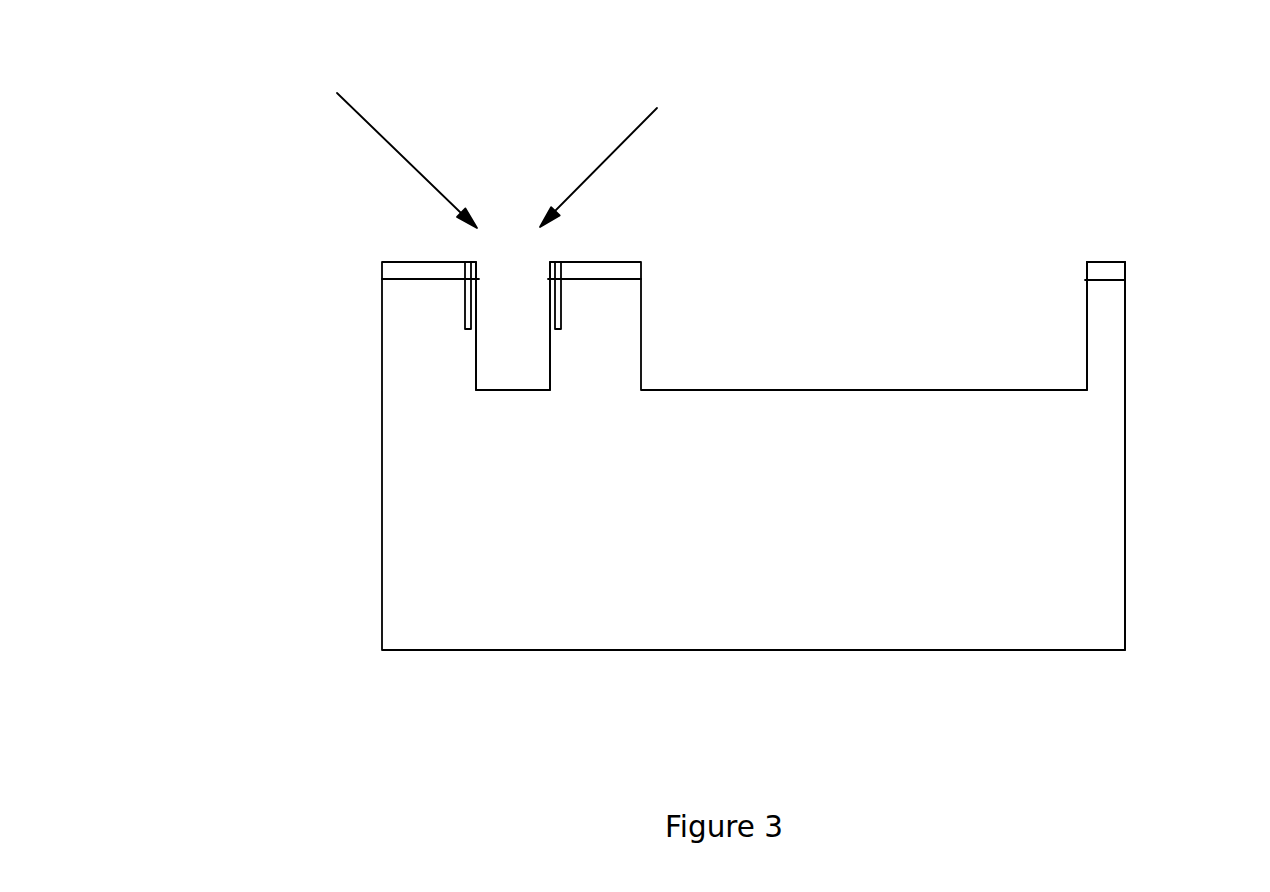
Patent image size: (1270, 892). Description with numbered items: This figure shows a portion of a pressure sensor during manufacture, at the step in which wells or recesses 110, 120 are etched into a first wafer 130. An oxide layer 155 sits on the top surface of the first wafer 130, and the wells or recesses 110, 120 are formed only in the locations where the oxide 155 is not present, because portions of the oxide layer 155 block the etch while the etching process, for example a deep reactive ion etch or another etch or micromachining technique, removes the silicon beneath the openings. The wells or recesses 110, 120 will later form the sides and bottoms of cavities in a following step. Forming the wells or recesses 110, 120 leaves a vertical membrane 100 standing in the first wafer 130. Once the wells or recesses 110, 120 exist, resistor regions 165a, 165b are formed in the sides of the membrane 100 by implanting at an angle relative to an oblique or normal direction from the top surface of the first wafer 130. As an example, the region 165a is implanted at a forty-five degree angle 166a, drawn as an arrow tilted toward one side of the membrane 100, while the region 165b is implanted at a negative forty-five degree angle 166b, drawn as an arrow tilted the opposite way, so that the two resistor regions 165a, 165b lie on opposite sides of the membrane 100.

The vertical membrane 100 is at (607, 353).
The well or recess 110 is at (523, 353).
The well or recess 120 is at (1068, 335).
The first wafer 130 is at (1087, 483).
The oxide layer 155 is at (1125, 268).
The resistor region 165a is at (470, 298).
The resistor region 165b is at (556, 300).
The 45 degree angle 166a is at (607, 160).
The –45 degree angle 166b is at (382, 137).